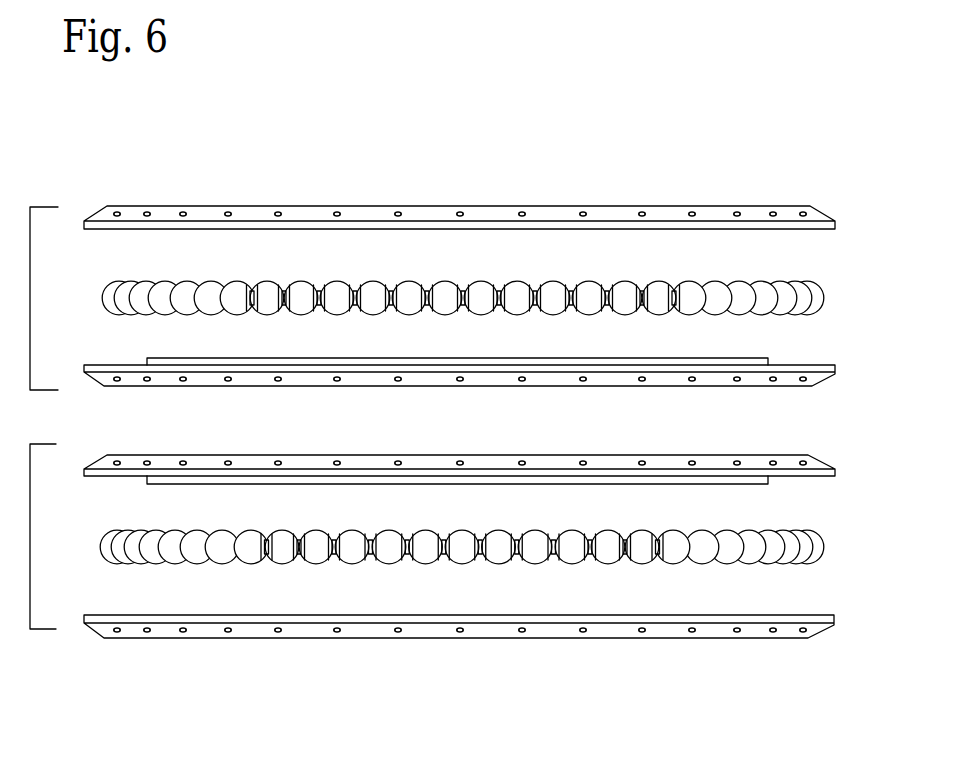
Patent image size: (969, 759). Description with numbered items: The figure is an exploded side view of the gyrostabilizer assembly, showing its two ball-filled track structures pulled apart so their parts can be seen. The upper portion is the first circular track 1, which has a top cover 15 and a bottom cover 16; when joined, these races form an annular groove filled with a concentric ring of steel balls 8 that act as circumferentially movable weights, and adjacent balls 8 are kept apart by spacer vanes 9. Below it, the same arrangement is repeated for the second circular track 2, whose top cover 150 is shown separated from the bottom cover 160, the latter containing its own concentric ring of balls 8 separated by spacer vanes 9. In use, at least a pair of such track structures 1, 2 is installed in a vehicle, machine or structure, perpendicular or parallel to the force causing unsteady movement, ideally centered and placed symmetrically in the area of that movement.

The first circular track 1 is at (46, 207).
The second circular track 2 is at (38, 629).
The balls 8 is at (340, 296).
The spacer vanes 9 is at (505, 289).
The top race 15 is at (548, 222).
The bottom race 16 is at (243, 378).
The top cover 150 is at (490, 467).
The bottom cover 160 is at (303, 630).